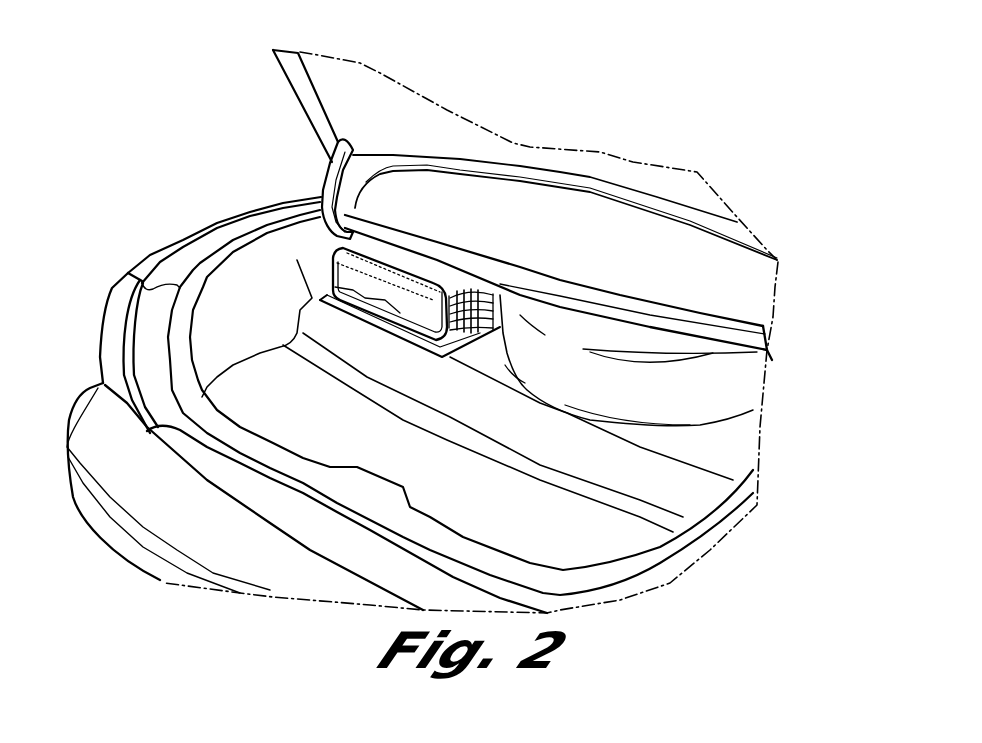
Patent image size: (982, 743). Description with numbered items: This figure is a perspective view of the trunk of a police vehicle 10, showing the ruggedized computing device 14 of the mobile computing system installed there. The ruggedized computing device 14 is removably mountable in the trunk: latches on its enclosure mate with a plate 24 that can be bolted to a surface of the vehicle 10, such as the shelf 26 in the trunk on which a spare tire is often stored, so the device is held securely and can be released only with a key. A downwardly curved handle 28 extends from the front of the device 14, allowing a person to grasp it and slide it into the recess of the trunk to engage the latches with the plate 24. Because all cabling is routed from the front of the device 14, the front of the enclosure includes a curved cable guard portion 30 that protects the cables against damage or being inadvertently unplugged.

The police vehicle 10 is at (108, 298).
The ruggedized computing device 14 is at (326, 249).
The plate 24 is at (268, 226).
The shelf 26 is at (733, 444).
The downwardly curved handle 28 is at (408, 318).
The curved cable guard portion 30 is at (373, 270).